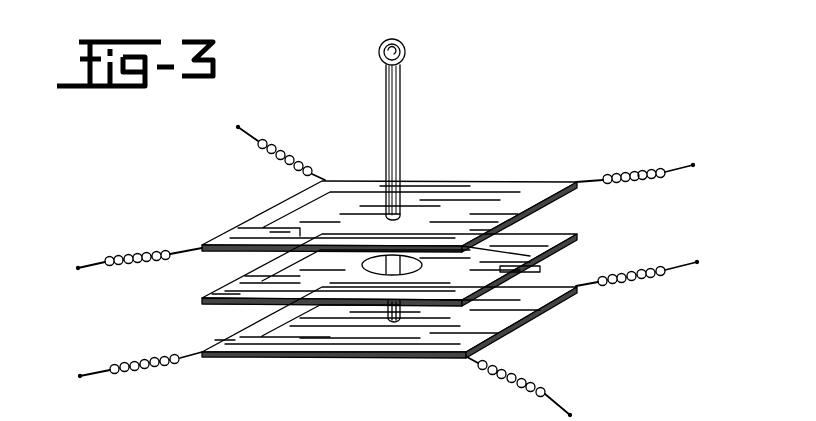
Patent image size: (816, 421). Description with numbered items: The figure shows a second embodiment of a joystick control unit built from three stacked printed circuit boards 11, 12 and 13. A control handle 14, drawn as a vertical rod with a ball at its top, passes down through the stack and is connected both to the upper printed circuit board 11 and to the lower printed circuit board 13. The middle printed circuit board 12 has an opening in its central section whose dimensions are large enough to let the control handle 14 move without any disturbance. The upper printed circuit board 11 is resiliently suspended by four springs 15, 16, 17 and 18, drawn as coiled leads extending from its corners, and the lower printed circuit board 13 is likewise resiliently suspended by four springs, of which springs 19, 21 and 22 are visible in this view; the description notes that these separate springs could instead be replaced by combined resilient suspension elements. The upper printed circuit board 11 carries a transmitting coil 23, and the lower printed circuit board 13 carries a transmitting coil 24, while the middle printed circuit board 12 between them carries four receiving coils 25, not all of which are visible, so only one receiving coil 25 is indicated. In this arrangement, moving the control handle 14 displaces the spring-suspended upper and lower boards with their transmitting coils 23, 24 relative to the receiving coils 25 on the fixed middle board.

The upper printed circuit board 11 is at (528, 190).
The middle printed circuit board 12 is at (556, 228).
The lower printed circuit board 13 is at (563, 304).
The control handle 14 is at (400, 122).
The spring 15 is at (135, 256).
The spring 16 is at (296, 160).
The spring 17 is at (627, 174).
The spring 18 is at (540, 270).
The spring 19 is at (145, 360).
The spring 21 is at (637, 272).
The spring 22 is at (478, 365).
The transmitting coil 23 is at (440, 184).
The transmitting coil 24 is at (327, 340).
The receiving coil 25 is at (221, 293).